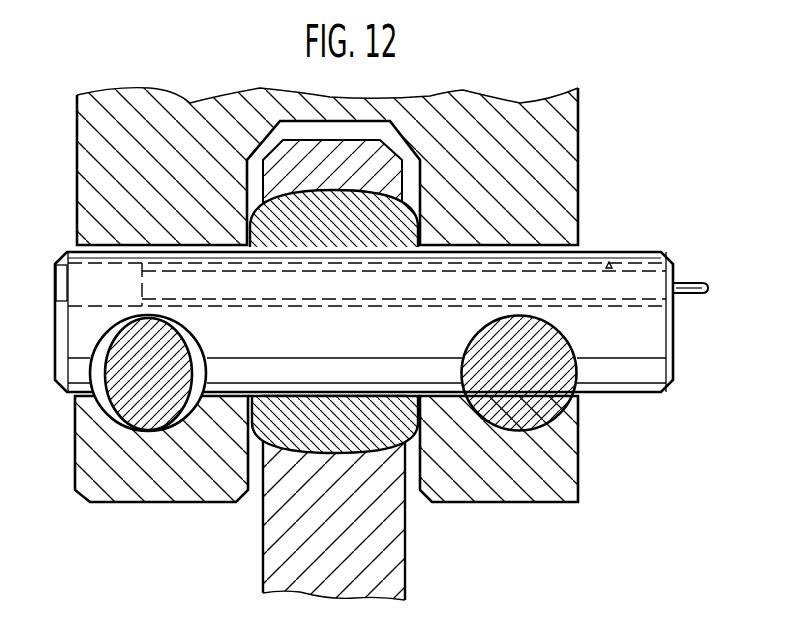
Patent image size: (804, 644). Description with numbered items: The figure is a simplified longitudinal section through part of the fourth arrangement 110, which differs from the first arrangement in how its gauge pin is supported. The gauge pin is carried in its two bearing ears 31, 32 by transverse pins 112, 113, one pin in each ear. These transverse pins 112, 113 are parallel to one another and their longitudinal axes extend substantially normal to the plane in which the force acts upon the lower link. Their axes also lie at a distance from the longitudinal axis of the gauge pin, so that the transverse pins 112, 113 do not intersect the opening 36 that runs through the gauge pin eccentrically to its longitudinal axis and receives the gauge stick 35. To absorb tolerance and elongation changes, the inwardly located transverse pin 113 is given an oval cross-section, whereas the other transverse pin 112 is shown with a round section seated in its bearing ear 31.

The fourth arrangement 110 is at (597, 137).
The gauge stick 35 is at (640, 285).
The opening 36 is at (609, 266).
The transverse pin 112 is at (541, 405).
The transverse pin 113 is at (130, 412).
The bearing ear 31 is at (527, 480).
The bearing ear 32 is at (153, 485).